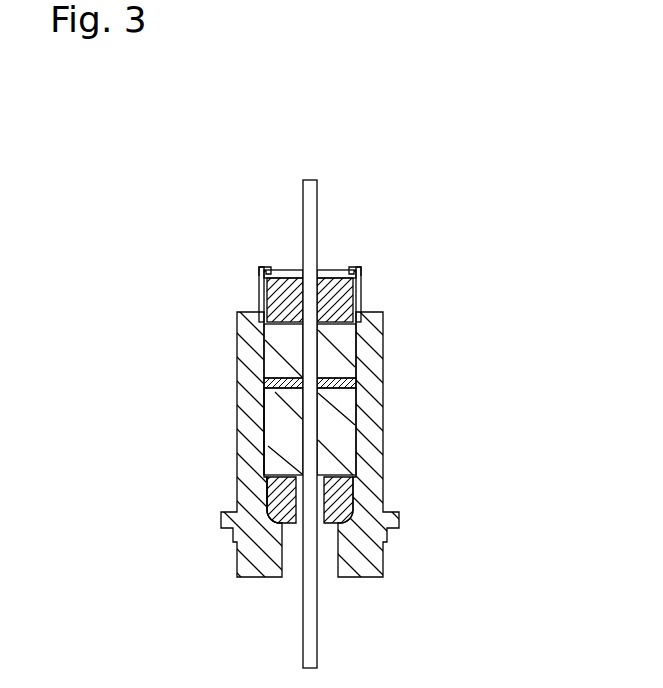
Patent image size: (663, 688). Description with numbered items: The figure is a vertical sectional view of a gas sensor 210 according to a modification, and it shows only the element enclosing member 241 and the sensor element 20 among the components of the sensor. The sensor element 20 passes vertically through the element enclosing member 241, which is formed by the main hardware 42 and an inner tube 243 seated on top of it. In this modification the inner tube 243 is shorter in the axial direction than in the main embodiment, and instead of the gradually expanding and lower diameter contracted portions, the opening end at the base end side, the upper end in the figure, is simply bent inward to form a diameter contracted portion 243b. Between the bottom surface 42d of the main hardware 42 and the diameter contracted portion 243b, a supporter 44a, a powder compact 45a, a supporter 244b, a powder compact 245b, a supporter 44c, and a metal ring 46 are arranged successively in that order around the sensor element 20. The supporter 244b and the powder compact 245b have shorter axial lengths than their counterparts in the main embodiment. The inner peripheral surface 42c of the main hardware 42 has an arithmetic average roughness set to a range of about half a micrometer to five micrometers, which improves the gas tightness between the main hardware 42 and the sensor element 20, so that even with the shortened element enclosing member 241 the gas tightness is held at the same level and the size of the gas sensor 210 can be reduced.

The sensor element 20 is at (313, 638).
The main hardware 42 is at (368, 478).
The inner peripheral surface 42c is at (264, 405).
The bottom surface 42d is at (290, 522).
The supporter 44a is at (342, 500).
The supporter 44c is at (347, 302).
The powder compact 45a is at (342, 428).
The metal ring 46 is at (272, 267).
The gas sensor 210 is at (277, 136).
The element enclosing member 241 is at (344, 208).
The inner tube 243 is at (259, 294).
The diameter contracted portion 243b is at (358, 268).
The supporter 244b is at (343, 384).
The powder compact 245b is at (347, 348).